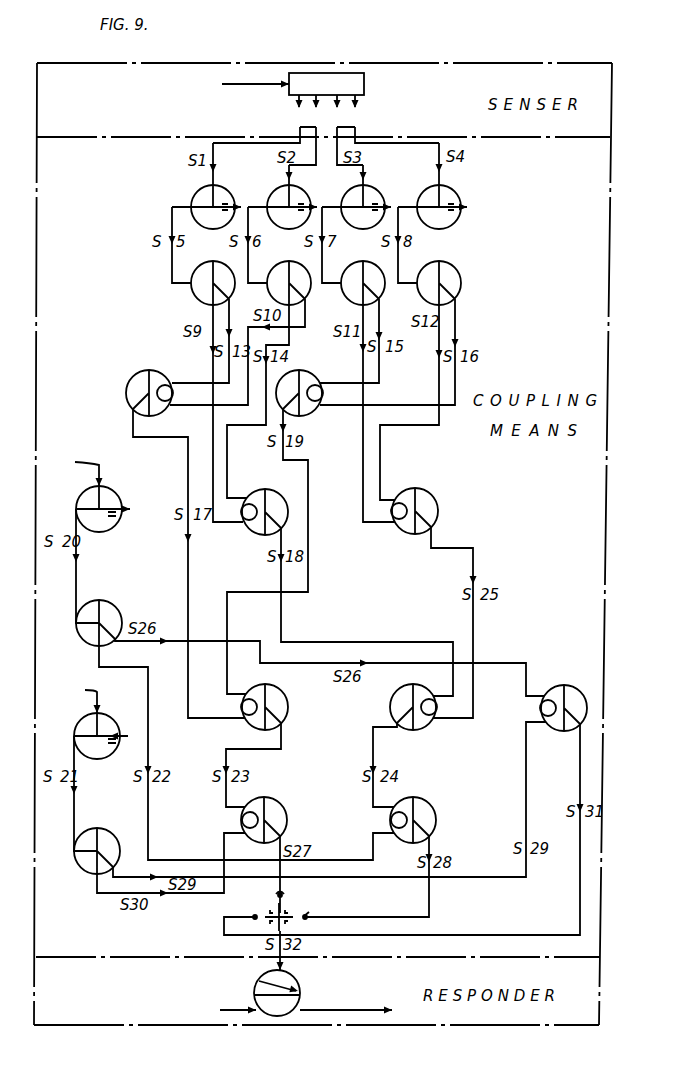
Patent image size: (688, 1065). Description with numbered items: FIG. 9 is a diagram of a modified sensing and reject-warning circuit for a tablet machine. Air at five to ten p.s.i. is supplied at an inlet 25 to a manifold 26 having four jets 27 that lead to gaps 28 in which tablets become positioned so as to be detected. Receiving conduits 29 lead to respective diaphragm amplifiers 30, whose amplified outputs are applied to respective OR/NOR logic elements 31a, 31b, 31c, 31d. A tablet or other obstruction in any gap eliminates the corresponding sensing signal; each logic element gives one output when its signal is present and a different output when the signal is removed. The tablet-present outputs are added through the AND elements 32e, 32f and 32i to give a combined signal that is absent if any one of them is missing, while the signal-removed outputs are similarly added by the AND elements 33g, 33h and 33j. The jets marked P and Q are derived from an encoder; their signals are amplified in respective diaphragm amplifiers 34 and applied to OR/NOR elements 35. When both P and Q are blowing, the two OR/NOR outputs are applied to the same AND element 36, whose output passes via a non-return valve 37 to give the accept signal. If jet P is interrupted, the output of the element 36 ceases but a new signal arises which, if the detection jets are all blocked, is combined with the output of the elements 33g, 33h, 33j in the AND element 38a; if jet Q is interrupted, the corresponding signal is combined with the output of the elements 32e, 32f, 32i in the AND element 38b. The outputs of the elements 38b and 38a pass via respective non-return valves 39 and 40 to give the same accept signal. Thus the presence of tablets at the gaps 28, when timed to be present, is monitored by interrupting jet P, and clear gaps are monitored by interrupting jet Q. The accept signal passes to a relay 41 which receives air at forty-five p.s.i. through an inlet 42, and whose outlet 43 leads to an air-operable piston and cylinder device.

The inlet 25 is at (255, 86).
The manifold 26 is at (364, 84).
The jets 27 is at (357, 100).
The gaps 28 is at (312, 117).
The receiving conduits 29 is at (298, 128).
The diaphragm amplifiers 30 is at (228, 192).
The OR/NOR logic element 31a is at (222, 250).
The OR/NOR logic element 31b is at (300, 251).
The OR/NOR logic element 31c is at (375, 251).
The OR/NOR logic element 31d is at (455, 270).
The AND element 32e is at (137, 378).
The AND element 32f is at (304, 378).
The AND element 32i is at (277, 697).
The AND element 33g is at (269, 488).
The AND element 33h is at (427, 502).
The AND element 33j is at (392, 708).
The diaphragm amplifiers 34 is at (108, 492).
The OR/NOR elements 35 is at (106, 608).
The AND element 36 is at (560, 696).
The non-return valve 37 is at (240, 917).
The AND element 38a is at (430, 816).
The AND element 38b is at (280, 811).
The non-return valve 39 is at (270, 896).
The non-return valve 40 is at (310, 914).
The relay 41 is at (294, 978).
The inlet 42 is at (229, 1010).
The outlet 43 is at (352, 1010).